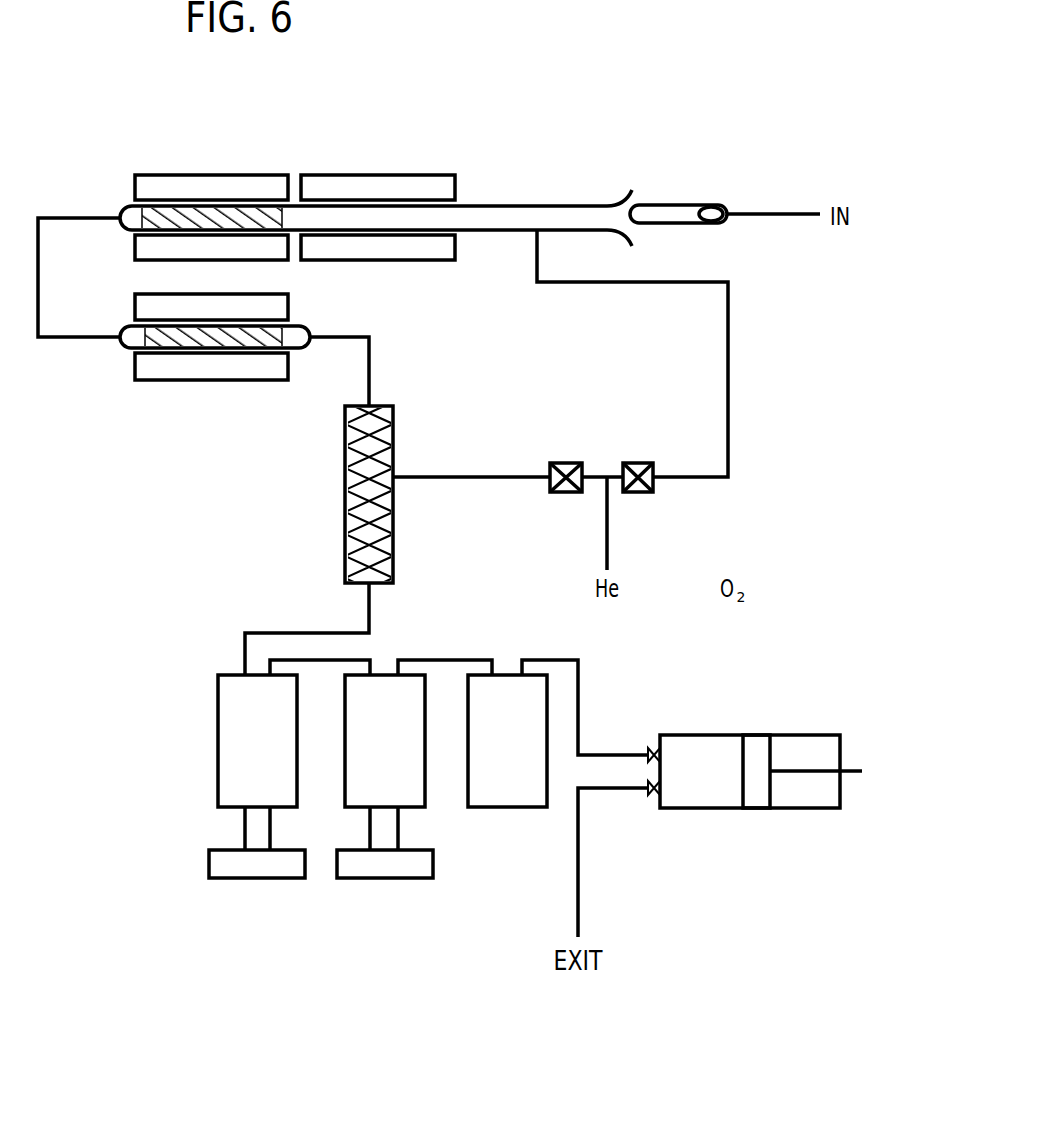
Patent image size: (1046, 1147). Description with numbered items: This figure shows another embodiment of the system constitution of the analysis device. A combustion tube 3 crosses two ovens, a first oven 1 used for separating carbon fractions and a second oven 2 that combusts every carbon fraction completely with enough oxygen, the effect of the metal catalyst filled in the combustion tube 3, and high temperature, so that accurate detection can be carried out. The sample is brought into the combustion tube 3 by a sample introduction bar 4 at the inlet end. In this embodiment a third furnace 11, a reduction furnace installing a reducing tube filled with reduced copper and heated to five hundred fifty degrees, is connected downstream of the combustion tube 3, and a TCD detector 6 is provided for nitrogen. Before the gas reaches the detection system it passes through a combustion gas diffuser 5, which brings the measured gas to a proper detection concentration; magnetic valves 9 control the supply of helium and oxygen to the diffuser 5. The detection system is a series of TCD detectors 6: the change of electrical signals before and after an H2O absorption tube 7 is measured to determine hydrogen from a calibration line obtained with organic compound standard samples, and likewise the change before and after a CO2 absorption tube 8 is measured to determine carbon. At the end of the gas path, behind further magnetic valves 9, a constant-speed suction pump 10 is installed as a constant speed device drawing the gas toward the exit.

The first oven 1 is at (357, 185).
The second oven 2 is at (200, 185).
The combustion tube 3 is at (496, 215).
The sample introduction bar 4 is at (687, 212).
The combustion gas diffuser 5 is at (345, 489).
The TCD detector 6 is at (277, 778).
The H2O absorption tube 7 is at (243, 865).
The CO2 absorption tube 8 is at (372, 865).
The magnetic valve 9 is at (572, 470).
The constant-speed suction pump 10 is at (757, 760).
The third furnace 11 is at (192, 365).